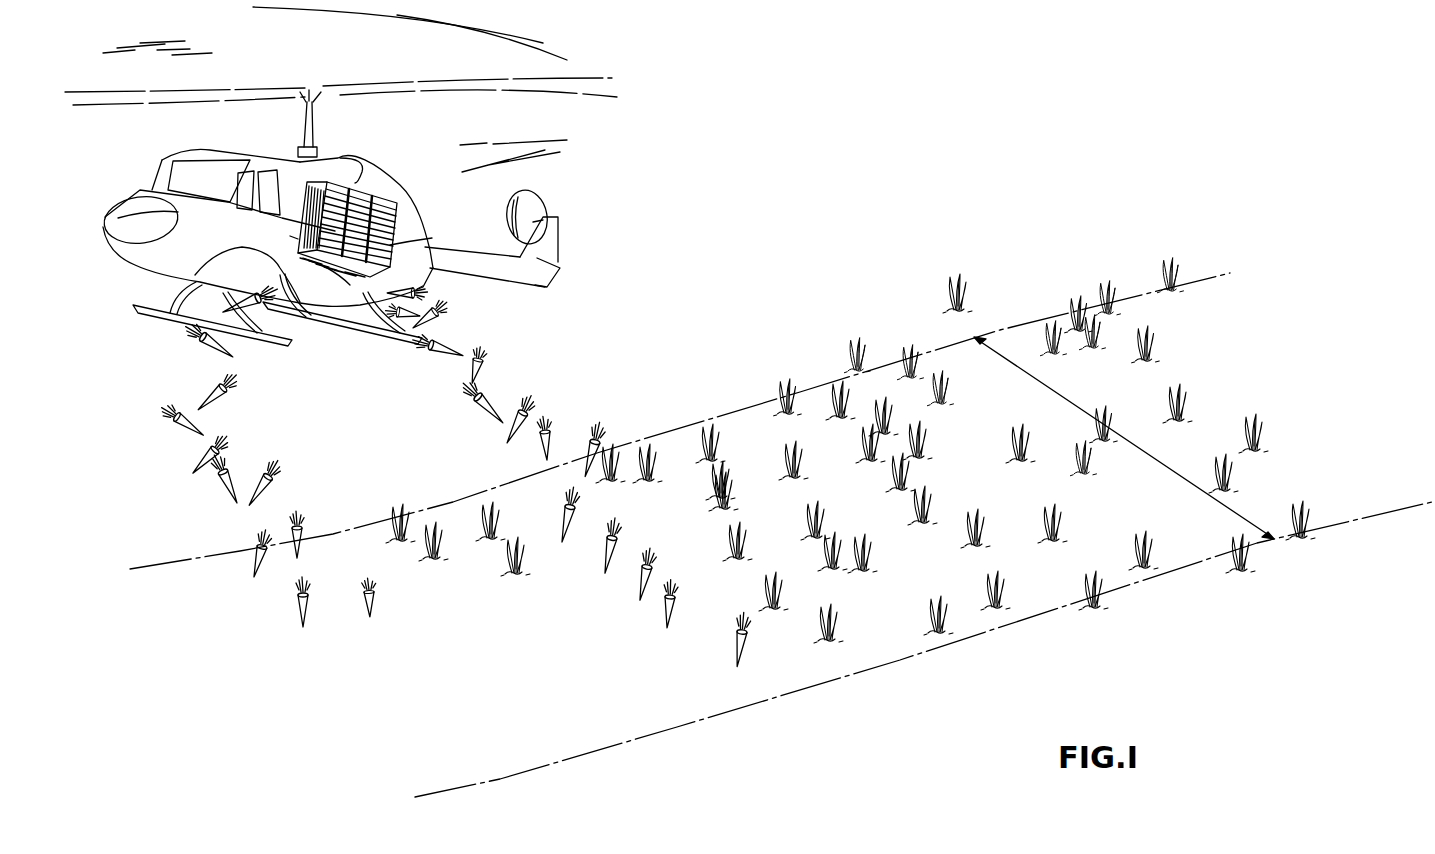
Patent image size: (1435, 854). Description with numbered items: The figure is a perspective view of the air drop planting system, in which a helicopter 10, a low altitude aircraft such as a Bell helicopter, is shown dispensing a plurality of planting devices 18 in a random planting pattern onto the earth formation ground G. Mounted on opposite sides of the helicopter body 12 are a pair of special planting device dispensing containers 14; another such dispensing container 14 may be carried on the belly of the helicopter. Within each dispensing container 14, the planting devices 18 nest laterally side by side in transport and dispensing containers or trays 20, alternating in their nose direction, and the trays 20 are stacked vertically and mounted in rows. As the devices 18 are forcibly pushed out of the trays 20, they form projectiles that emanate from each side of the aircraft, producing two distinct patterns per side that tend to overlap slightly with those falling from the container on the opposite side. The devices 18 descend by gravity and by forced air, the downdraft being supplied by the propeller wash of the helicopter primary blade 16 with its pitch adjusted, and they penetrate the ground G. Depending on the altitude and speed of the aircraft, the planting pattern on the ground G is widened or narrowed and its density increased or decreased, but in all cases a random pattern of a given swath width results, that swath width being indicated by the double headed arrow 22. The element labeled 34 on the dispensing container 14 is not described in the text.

The helicopter 10 is at (341, 176).
The helicopter body 12 is at (158, 255).
The special planting device dispensing container 14 is at (375, 217).
The helicopter primary blade 16 is at (573, 83).
The planting device 18 is at (436, 326).
The transport and dispensing container 20 is at (362, 202).
The double headed arrow 22 is at (1078, 418).
The mounting strap 34 is at (393, 249).
The earth formation ground G is at (757, 660).